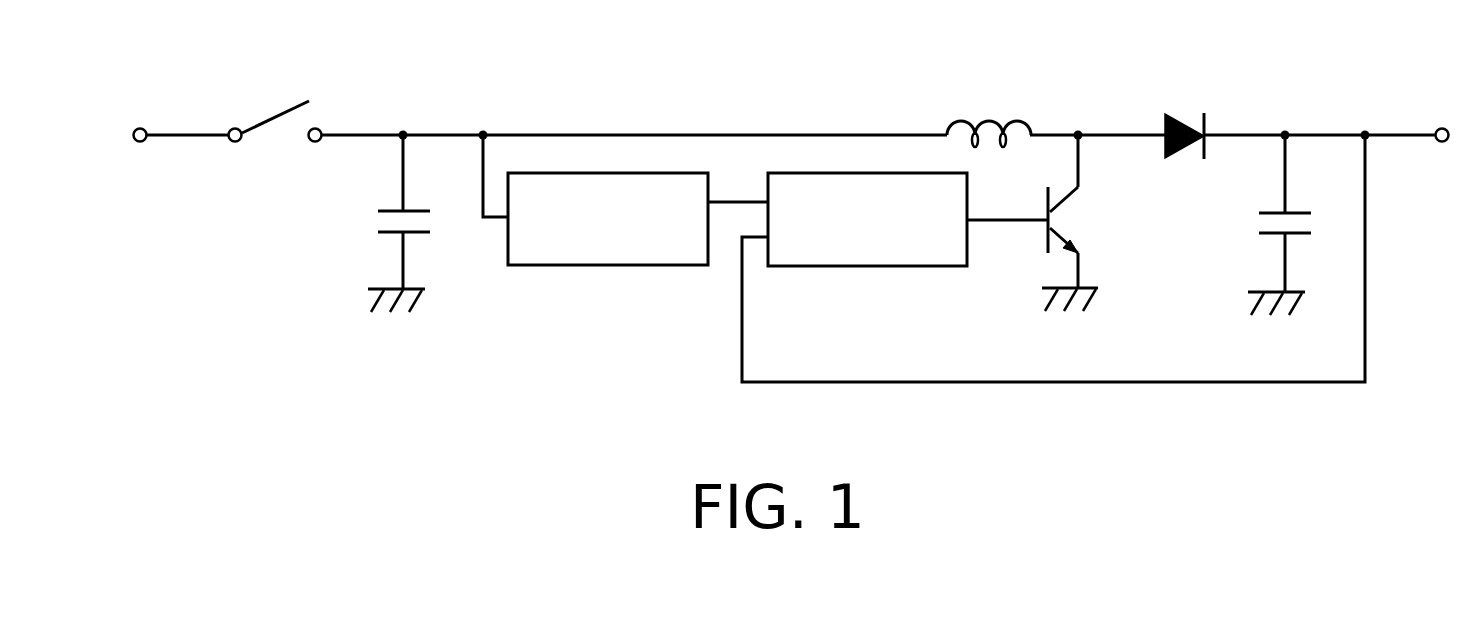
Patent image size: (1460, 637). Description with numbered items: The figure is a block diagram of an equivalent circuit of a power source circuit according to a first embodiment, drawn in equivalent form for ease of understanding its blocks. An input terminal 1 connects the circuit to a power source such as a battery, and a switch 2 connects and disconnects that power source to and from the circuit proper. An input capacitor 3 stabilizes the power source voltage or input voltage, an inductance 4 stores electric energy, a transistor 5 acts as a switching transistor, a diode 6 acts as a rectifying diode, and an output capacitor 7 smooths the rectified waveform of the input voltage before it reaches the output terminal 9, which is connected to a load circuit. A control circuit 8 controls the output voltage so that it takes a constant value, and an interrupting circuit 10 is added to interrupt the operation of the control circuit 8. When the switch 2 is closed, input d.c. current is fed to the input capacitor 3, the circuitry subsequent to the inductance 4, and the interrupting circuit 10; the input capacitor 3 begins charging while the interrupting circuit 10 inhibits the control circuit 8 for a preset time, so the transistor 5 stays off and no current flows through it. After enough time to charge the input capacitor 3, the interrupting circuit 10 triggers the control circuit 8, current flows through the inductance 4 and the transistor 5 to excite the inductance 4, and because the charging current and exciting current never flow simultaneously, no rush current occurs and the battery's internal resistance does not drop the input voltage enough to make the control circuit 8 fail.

The input terminal 1 is at (140, 142).
The switch 2 is at (273, 133).
The input capacitor 3 is at (376, 214).
The inductance 4 is at (988, 115).
The transistor 5 is at (1058, 258).
The diode 6 is at (1190, 148).
The output capacitor 7 is at (1273, 242).
The control circuit 8 is at (883, 267).
The output terminal 9 is at (1447, 148).
The interrupting circuit 10 is at (617, 265).